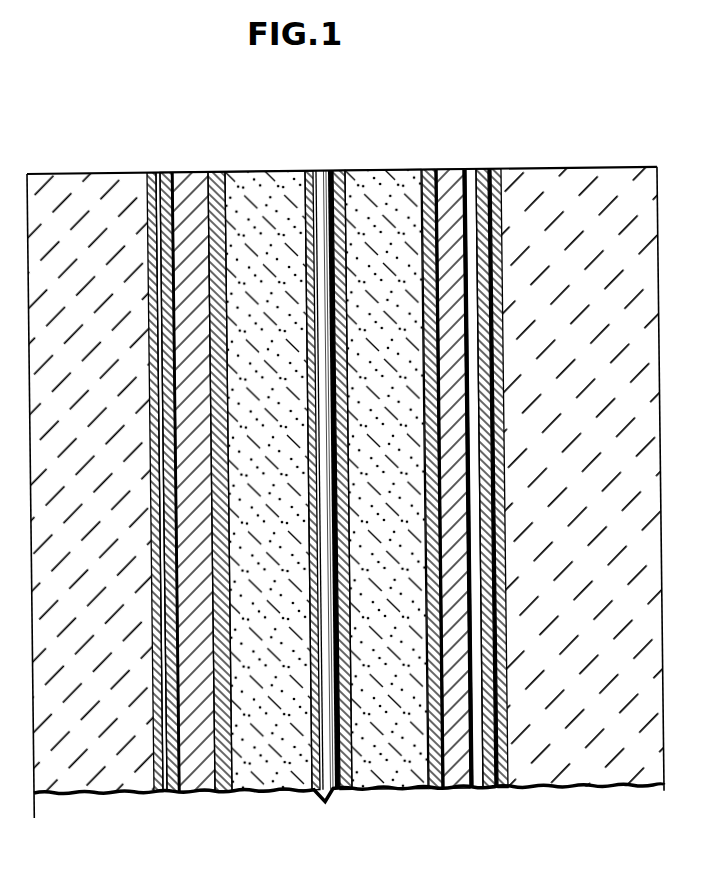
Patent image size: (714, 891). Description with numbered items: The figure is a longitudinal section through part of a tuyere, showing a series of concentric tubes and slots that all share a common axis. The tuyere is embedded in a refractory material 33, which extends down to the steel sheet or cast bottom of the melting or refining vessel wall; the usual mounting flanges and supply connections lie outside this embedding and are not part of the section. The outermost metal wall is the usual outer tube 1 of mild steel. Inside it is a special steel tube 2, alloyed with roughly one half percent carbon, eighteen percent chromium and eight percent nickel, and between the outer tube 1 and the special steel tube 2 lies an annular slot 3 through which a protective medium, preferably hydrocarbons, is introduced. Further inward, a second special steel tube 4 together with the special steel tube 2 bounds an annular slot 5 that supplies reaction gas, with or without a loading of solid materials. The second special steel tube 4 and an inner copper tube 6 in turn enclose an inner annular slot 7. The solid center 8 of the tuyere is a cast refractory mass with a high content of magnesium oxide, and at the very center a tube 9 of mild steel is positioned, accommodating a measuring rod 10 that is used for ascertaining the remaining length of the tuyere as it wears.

The outer tube 1 is at (503, 783).
The special steel tube 2 is at (484, 173).
The annular slot 3 is at (490, 173).
The second special steel tube 4 is at (462, 780).
The annular slot 5 is at (477, 782).
The inner copper tube 6 is at (433, 175).
The inner annular slot 7 is at (436, 175).
The solid center 8 is at (250, 185).
The tube 9 is at (311, 188).
The measuring rod 10 is at (328, 182).
The refractory material 33 is at (575, 177).